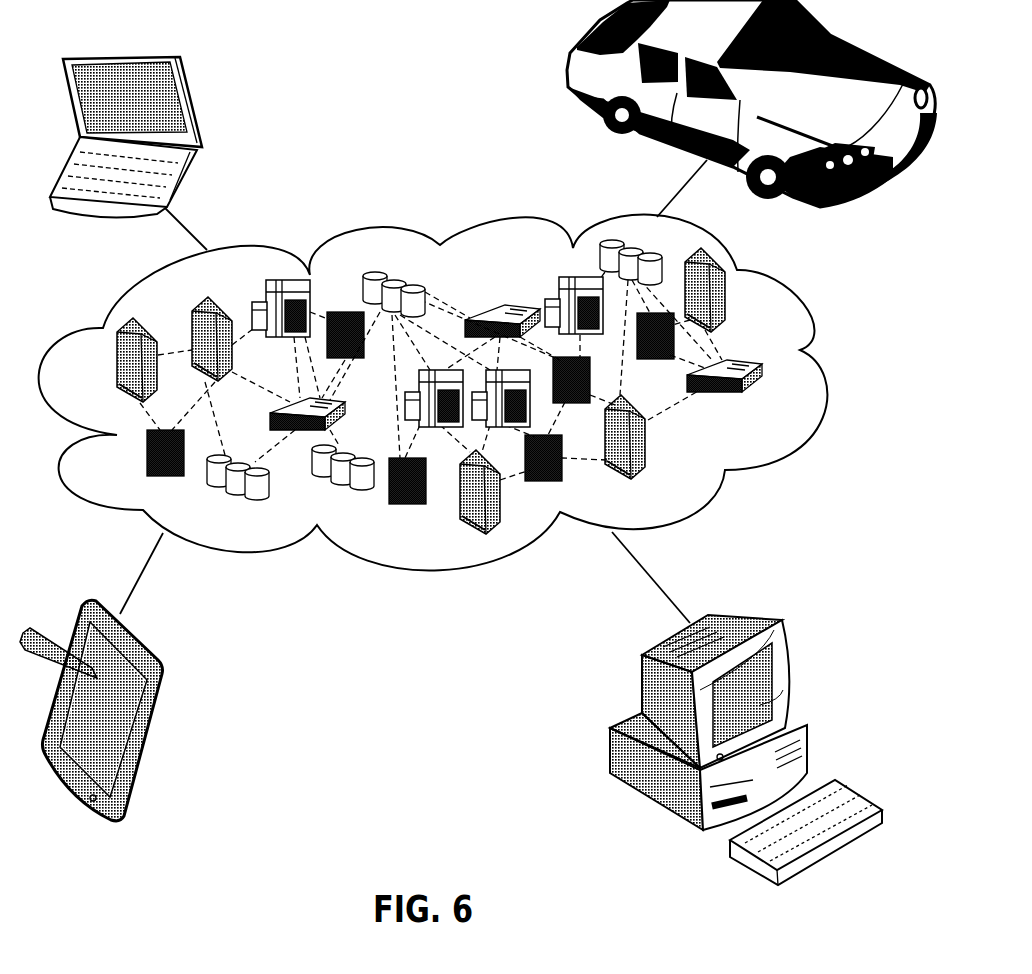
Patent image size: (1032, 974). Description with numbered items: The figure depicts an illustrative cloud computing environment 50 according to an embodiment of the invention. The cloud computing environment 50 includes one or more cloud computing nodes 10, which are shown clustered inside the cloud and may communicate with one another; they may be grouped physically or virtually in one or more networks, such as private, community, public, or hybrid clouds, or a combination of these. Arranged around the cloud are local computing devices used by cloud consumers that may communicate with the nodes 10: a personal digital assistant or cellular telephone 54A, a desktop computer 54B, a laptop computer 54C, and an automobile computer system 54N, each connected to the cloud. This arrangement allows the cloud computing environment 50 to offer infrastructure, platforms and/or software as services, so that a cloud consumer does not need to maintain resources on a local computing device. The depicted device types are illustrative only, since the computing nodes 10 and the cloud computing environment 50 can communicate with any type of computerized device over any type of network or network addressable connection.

The cloud computing node 10 is at (770, 403).
The cloud computing environment 50 is at (823, 372).
The personal digital assistant (PDA) or cellular telephone 54A is at (157, 703).
The desktop computer 54B is at (750, 613).
The laptop computer 54C is at (200, 103).
The automobile computer system 54N is at (568, 72).